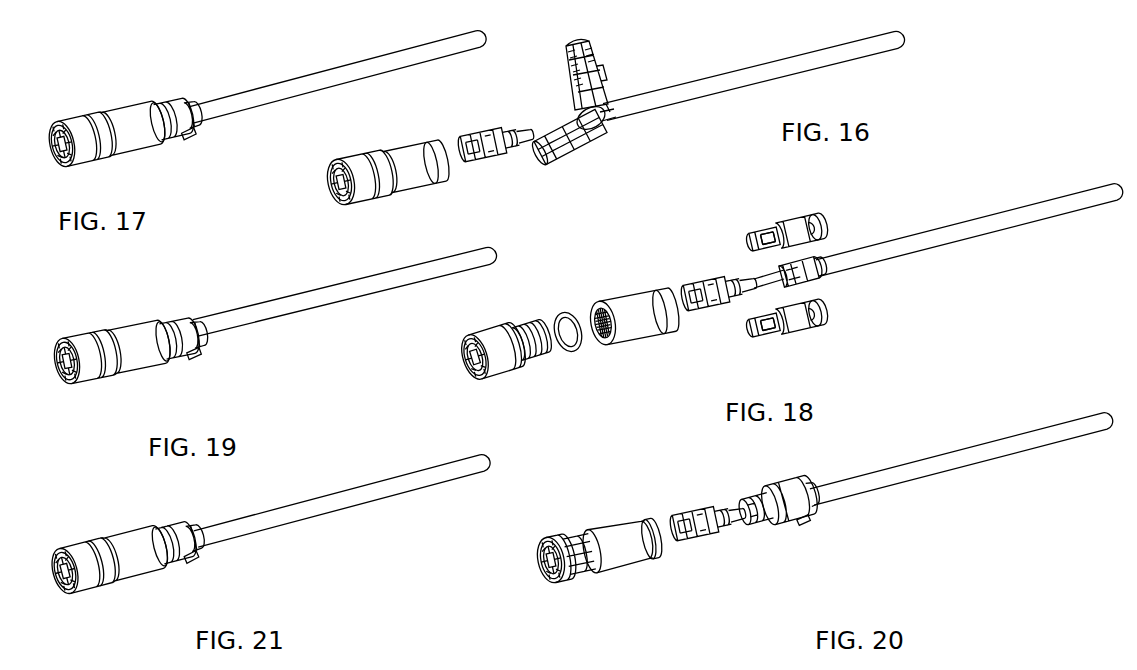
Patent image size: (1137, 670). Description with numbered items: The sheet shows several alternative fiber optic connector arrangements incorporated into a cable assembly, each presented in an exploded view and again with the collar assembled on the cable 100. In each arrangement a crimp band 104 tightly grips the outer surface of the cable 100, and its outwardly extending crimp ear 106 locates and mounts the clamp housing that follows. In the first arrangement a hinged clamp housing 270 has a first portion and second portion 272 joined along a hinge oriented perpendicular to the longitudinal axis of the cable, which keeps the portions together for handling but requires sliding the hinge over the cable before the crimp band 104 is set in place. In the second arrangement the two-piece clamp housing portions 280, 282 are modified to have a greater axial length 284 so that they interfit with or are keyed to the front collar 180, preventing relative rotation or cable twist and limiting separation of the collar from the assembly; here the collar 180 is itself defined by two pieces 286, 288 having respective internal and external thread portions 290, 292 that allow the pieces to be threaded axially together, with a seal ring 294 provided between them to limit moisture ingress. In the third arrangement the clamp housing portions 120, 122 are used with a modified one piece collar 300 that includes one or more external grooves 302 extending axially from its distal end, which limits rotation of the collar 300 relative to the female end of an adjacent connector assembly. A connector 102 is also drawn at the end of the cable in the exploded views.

In FIG. 17, the cable 100 is at (398, 56).
In FIG. 16, the cable 100 is at (790, 65).
In FIG. 18, the cable 100 is at (1003, 222).
In FIG. 19, the cable 100 is at (374, 282).
In FIG. 21, the cable 100 is at (402, 481).
In FIG. 20, the cable 100 is at (1008, 444).
In FIG. 16, the optical connector 102 is at (480, 131).
In FIG. 18, the optical connector 102 is at (731, 291).
In FIG. 20, the optical connector 102 is at (690, 523).
In FIG. 18, the crimp band 104 is at (813, 260).
In FIG. 17, the crimp ear 106 is at (187, 126).
In FIG. 18, the crimp ear 106 is at (816, 278).
In FIG. 19, the crimp ear 106 is at (193, 346).
In FIG. 21, the crimp ear 106 is at (191, 550).
In FIG. 20, the crimp ear 106 is at (808, 507).
In FIG. 21, the first clamp housing portion 120 is at (182, 535).
In FIG. 20, the first clamp housing portion 120 is at (793, 485).
In FIG. 21, the second clamp housing portion 122 is at (180, 562).
In FIG. 20, the second clamp housing portion 122 is at (799, 524).
In FIG. 17, the collar 180 is at (118, 117).
In FIG. 19, the collar 180 is at (135, 338).
In FIG. 17, the hinged clamp housing 270 is at (172, 108).
In FIG. 16, the hinged clamp housing 270 is at (603, 72).
In FIG. 17, the clamp housing portion 272 is at (173, 138).
In FIG. 16, the clamp housing portion 272 is at (612, 119).
In FIG. 18, the clamp housing portion 280 is at (800, 223).
In FIG. 19, the clamp housing portion 280 is at (178, 320).
In FIG. 18, the clamp housing portion 282 is at (812, 328).
In FIG. 19, the clamp housing portion 282 is at (184, 358).
In FIG. 18, the axial length 284 is at (750, 242).
In FIG. 18, the collar piece 286 is at (630, 307).
In FIG. 18, the collar piece 288 is at (500, 327).
In FIG. 18, the thread portion 290 is at (541, 371).
In FIG. 18, the thread portion 292 is at (612, 339).
In FIG. 18, the seal ring 294 is at (568, 315).
In FIG. 21, the one piece collar 300 is at (135, 546).
In FIG. 20, the one piece collar 300 is at (605, 525).
In FIG. 21, the external groove 302 is at (86, 548).
In FIG. 20, the external groove 302 is at (572, 589).